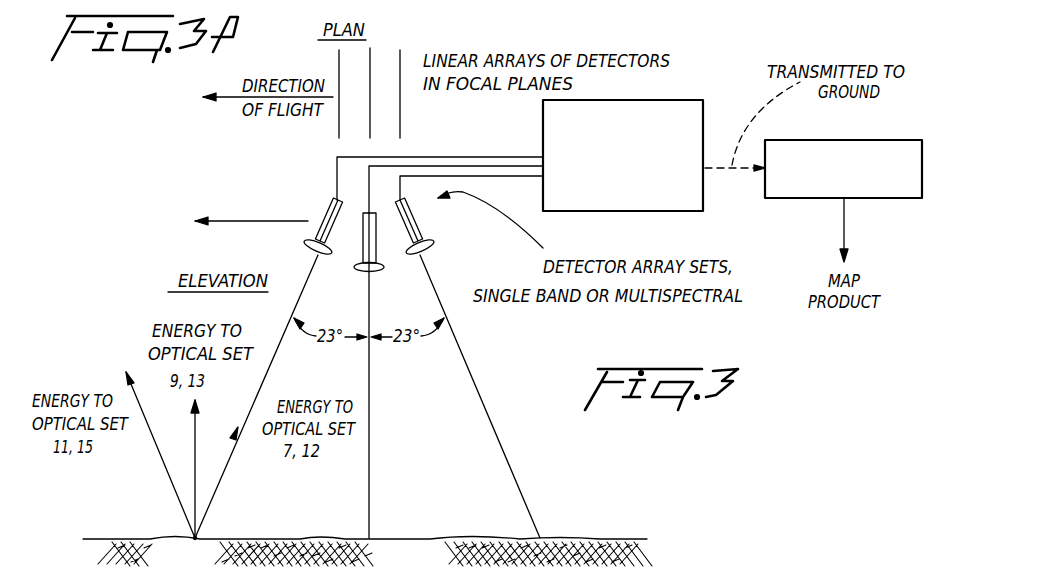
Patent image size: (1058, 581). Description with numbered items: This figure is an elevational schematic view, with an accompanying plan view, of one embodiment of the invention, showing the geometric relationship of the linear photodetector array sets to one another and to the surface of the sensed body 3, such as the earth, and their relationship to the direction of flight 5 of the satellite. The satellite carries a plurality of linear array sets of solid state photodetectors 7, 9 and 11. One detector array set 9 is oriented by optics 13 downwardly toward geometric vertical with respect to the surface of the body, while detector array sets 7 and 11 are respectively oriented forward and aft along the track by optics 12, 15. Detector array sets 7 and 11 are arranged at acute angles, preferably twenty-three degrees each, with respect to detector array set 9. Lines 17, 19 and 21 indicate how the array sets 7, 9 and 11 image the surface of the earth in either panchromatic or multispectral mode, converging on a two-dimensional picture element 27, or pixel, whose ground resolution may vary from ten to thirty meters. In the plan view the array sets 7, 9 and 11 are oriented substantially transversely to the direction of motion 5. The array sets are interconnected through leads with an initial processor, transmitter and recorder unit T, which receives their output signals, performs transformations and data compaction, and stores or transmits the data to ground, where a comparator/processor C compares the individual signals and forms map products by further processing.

In FIG. 3, the rotating celestial body 3 is at (608, 533).
In FIG. 3A, the orbital path 5 is at (233, 98).
In FIG. 3, the orbital path 5 is at (240, 221).
In FIG. 3A, the linear array set of solid state photodetectors 7 is at (338, 62).
In FIG. 3, the linear array set of solid state photodetectors 7 is at (331, 212).
In FIG. 3A, the linear array set of solid state photodetectors 9 is at (373, 55).
In FIG. 3, the linear array set of solid state photodetectors 9 is at (376, 238).
In FIG. 3A, the linear array set of solid state photodetectors 11 is at (401, 117).
In FIG. 3, the linear array set of solid state photodetectors 11 is at (405, 210).
In FIG. 3, the optics 12 is at (304, 243).
In FIG. 3, the optics 13 is at (360, 268).
In FIG. 3, the optics 15 is at (430, 246).
In FIG. 3, the line 17 is at (228, 460).
In FIG. 3, the line 19 is at (371, 488).
In FIG. 3, the line 21 is at (497, 432).
In FIG. 3, the two-dimensional picture element 27 is at (192, 536).
In FIG. 3, the initial processor, transmitter and recorder unit T is at (707, 124).
In FIG. 3, the comparator/processor C is at (893, 186).